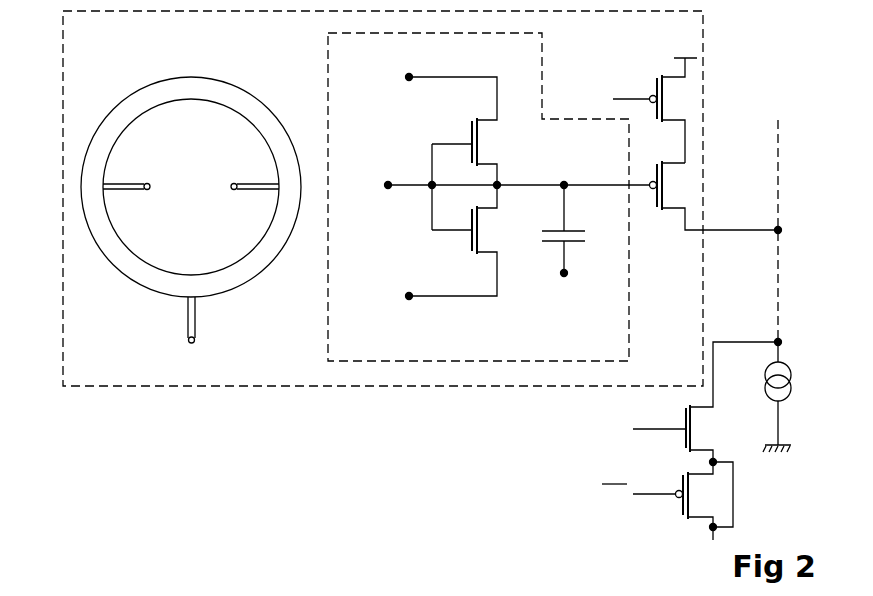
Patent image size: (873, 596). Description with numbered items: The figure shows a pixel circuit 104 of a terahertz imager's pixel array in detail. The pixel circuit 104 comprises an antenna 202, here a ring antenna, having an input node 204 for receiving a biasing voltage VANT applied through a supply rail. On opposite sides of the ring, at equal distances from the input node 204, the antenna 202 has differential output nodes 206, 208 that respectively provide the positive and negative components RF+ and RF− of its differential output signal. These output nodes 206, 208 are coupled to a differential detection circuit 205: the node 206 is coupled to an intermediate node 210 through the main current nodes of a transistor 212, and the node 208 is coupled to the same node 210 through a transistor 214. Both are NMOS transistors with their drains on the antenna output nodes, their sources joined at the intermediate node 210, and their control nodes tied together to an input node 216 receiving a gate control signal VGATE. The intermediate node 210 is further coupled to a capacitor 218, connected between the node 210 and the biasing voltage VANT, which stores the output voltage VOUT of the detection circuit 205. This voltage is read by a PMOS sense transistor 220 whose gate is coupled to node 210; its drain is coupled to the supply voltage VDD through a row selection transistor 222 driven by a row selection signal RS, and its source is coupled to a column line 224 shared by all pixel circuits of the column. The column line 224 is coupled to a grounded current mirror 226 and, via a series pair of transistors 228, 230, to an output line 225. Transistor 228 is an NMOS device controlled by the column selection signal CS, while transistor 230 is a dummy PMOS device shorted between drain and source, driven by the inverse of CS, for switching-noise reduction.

The pixel circuit 104 is at (63, 62).
The antenna 202 is at (228, 93).
The input node 204 is at (195, 340).
The differential detection circuit 205 is at (543, 62).
The differential output node 206 is at (147, 190).
The differential output node 208 is at (233, 190).
The intermediate node 210 is at (499, 188).
The transistor 212 is at (480, 138).
The transistor 214 is at (488, 246).
The input node 216 is at (388, 188).
The capacitor 218 is at (587, 234).
The sense transistor 220 is at (677, 185).
The row selection transistor 222 is at (677, 98).
The column line 224 is at (780, 203).
The output line 225 is at (715, 537).
The grounded current mirror 226 is at (790, 373).
The transistor 228 is at (694, 428).
The dummy PMOS transistor 230 is at (683, 512).